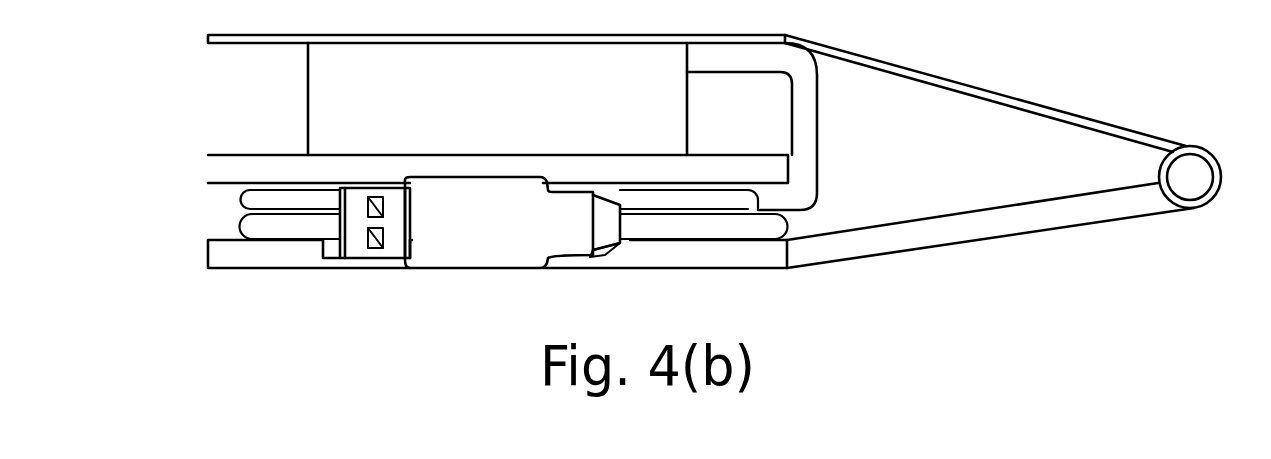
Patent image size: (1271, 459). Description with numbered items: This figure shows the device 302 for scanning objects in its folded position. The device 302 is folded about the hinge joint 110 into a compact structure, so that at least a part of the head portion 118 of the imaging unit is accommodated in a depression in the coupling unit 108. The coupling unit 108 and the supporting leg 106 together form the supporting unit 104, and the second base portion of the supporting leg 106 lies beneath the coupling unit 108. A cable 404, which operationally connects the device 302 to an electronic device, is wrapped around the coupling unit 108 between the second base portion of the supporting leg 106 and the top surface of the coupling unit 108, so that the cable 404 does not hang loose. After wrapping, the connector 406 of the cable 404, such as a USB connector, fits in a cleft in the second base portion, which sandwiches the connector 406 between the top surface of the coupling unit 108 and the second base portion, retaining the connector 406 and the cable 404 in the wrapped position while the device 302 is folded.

The device 302 is at (1117, 93).
The hinge joint 110 is at (1202, 210).
The supporting unit 104 is at (991, 265).
The supporting leg 106 is at (1025, 235).
The cable 404 is at (818, 142).
The head portion 118 is at (687, 90).
The coupling unit 108 is at (810, 222).
The connector 406 is at (393, 258).